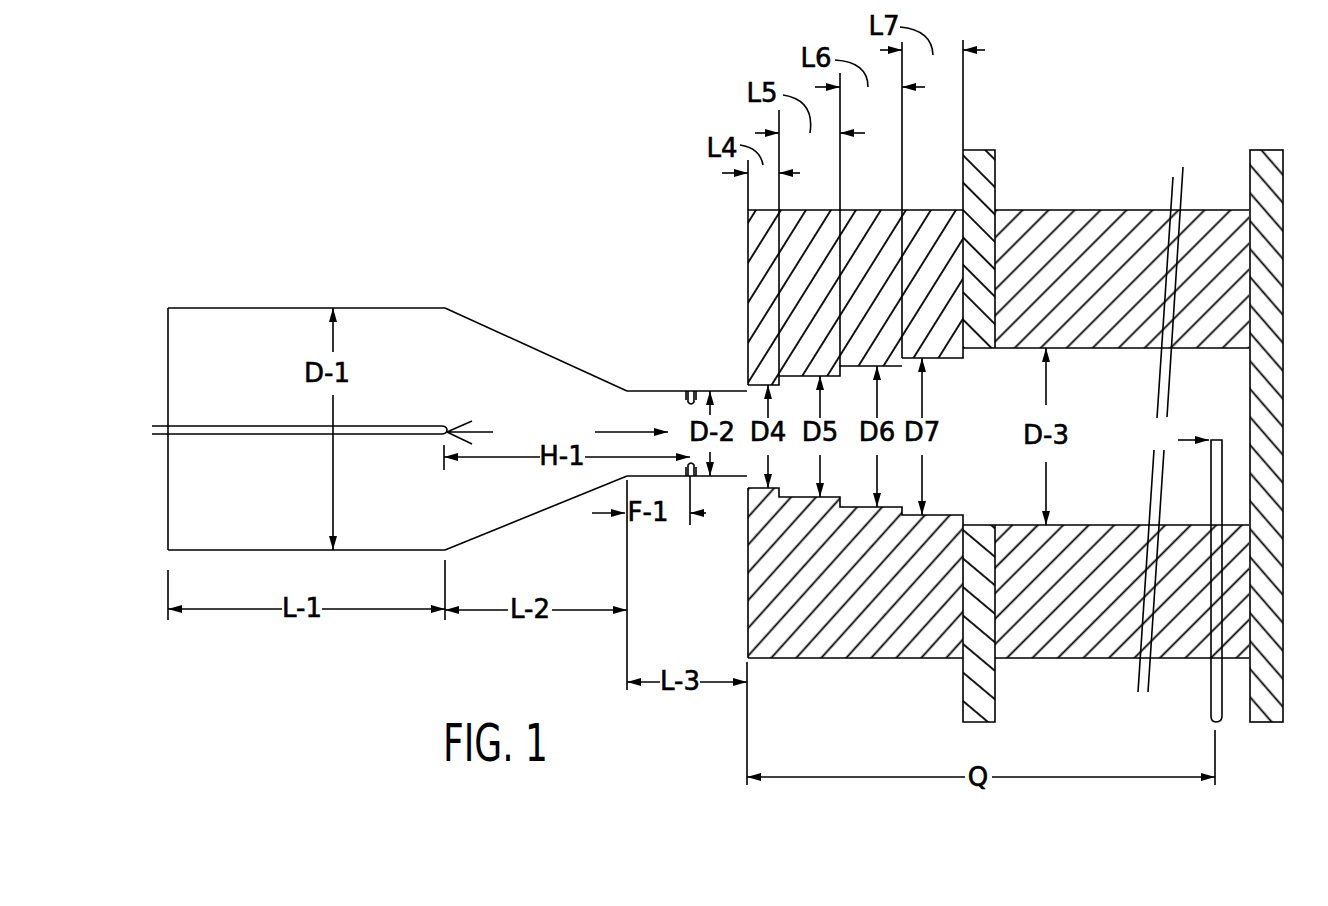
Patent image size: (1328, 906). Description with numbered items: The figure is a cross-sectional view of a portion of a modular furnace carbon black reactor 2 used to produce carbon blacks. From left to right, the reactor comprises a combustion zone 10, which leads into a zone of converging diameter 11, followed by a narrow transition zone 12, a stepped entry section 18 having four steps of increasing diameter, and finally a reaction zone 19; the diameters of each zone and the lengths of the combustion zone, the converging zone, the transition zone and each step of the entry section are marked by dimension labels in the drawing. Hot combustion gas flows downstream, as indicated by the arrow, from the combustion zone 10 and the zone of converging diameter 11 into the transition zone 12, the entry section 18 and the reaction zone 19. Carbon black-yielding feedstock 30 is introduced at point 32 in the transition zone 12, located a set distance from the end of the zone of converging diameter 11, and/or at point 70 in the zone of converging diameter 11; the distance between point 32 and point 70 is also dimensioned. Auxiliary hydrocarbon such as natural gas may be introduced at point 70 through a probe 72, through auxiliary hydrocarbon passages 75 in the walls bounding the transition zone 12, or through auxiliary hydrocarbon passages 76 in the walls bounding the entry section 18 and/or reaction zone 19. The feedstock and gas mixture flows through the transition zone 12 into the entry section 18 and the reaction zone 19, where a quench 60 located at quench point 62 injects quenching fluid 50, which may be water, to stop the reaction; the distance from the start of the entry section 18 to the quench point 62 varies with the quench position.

The modular furnace carbon black reactor 2 is at (168, 328).
The combustion zone 10 is at (252, 327).
The zone of converging diameter 11 is at (452, 370).
The transition zone 12 is at (727, 402).
The entry section 18 is at (953, 378).
The reaction zone 19 is at (1122, 363).
The carbon black-yielding feedstock 30 is at (689, 393).
The feedstock injection point 32 is at (690, 394).
The quenching fluid 50 is at (1205, 417).
The quench 60 is at (1213, 510).
The quench point 62 is at (1222, 683).
The auxiliary hydrocarbon injection point 70 is at (472, 413).
The probe 72 is at (245, 424).
The auxiliary hydrocarbon passages 75 is at (690, 394).
The auxiliary hydrocarbon passages 76 is at (762, 384).